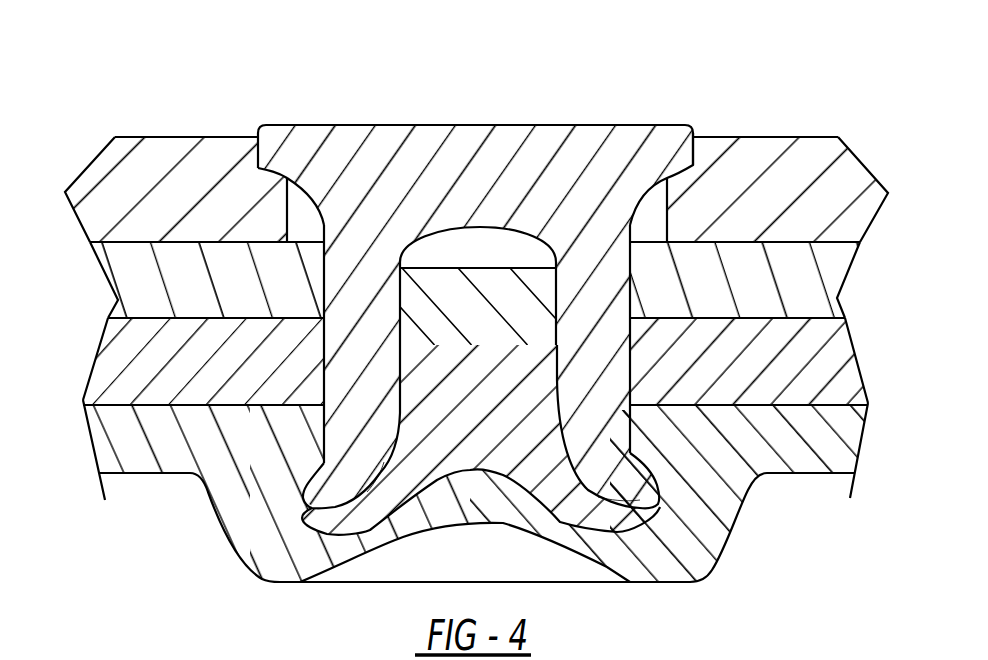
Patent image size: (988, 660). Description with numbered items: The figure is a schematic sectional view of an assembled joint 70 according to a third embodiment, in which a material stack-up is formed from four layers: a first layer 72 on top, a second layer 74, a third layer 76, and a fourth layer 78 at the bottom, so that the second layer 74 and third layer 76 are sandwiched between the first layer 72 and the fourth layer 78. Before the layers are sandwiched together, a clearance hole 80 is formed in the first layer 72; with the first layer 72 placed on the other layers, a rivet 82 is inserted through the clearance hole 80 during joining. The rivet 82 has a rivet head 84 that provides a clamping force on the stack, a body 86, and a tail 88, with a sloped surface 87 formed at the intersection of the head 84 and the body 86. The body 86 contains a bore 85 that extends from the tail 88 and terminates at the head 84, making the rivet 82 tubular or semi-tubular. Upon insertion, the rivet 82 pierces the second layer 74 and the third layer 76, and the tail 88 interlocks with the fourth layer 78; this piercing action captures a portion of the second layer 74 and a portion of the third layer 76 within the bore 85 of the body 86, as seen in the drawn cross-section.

The joint 70 is at (135, 113).
The first layer 72 is at (120, 198).
The second layer 74 is at (148, 278).
The third layer 76 is at (147, 363).
The fourth layer 78 is at (133, 433).
The clearance hole 80 is at (494, 330).
The rivet 82 is at (473, 140).
The rivet head 84 is at (295, 150).
The bore 85 is at (463, 252).
The body 86 is at (375, 400).
The sloped surface 87 is at (285, 145).
The tail 88 is at (623, 490).